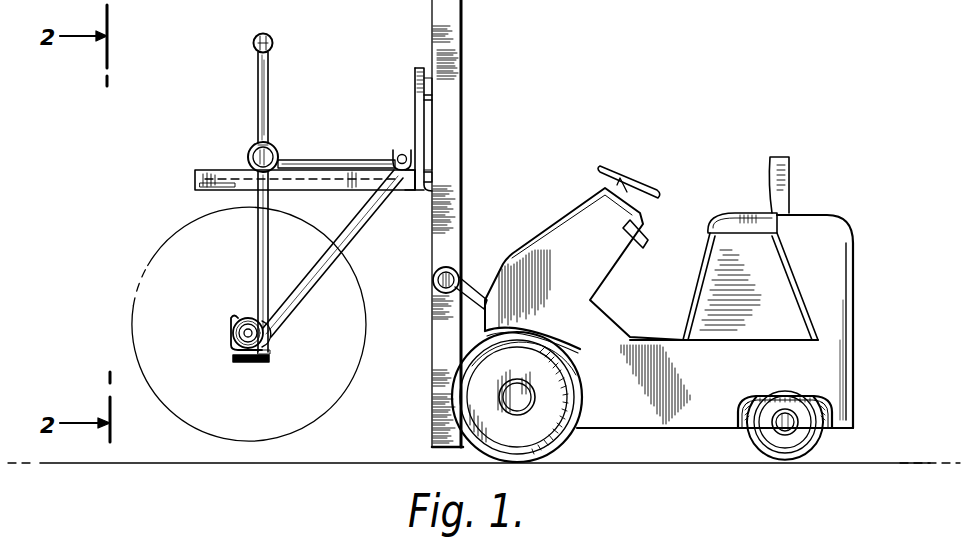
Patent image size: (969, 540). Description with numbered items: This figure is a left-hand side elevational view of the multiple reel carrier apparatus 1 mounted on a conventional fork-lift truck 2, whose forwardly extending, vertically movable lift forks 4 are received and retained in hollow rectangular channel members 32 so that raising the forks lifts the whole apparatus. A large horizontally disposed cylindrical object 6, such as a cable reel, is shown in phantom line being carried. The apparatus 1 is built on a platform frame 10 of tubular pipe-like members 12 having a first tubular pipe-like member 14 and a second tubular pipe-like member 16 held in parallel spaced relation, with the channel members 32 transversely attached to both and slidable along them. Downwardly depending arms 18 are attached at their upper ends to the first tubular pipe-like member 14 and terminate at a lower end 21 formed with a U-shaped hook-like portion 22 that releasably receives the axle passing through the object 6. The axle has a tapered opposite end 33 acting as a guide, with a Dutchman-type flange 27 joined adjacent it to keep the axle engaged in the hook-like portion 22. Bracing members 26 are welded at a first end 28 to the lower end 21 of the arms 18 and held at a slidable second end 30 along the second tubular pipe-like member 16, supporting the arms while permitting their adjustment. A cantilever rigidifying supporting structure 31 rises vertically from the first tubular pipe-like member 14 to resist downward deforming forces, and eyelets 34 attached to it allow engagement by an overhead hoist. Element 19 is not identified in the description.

The apparatus 1 is at (524, 90).
The fork-lift truck 2 is at (810, 220).
The lift forks 4 is at (414, 70).
The cylindrical objects 6 is at (144, 282).
The platform frame 10 is at (246, 72).
The tubular pipe-like members 12 is at (205, 170).
The first tubular pipe-like member 14 is at (274, 148).
The second tubular pipe-like member 16 is at (402, 149).
The downwardly depending arms 18 is at (257, 262).
The base plate 19 is at (252, 364).
The lower end 21 is at (255, 320).
The U-shaped hook-like portion 22 is at (228, 322).
The bracing members 26 is at (340, 238).
The flange 27 is at (236, 342).
The first end 28 is at (275, 340).
The second end 30 is at (388, 196).
The cantilever rigidifying supporting structure 31 is at (266, 104).
The channel members 32 is at (200, 183).
The opposite end 33 is at (272, 350).
The eyelets 34 is at (270, 40).